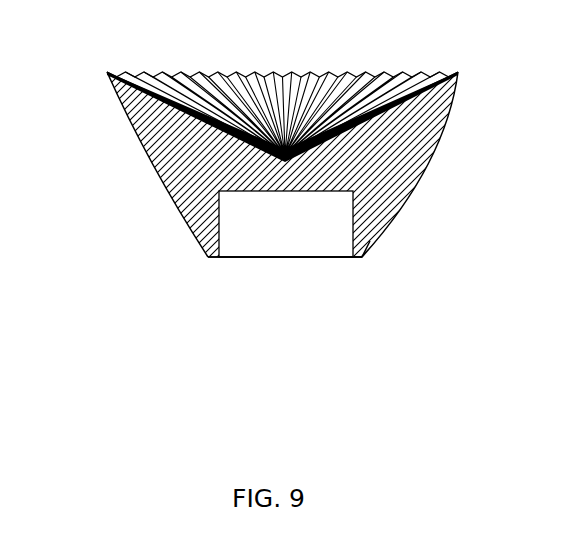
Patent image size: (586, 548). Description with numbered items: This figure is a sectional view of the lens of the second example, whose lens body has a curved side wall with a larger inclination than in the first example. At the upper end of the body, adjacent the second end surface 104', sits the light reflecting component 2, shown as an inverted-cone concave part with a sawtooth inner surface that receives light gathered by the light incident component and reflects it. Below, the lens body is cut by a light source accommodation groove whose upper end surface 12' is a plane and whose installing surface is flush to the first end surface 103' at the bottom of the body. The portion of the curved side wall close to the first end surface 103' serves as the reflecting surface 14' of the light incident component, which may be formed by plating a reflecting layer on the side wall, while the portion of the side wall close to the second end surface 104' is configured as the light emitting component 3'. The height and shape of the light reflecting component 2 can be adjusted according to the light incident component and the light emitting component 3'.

The light reflecting component 2 is at (345, 72).
The light emitting component 3' is at (293, 165).
The upper end surface of the light source accommodation groove 12' is at (286, 249).
The reflecting surface 14' is at (377, 271).
The first end surface 103' is at (285, 315).
The second end surface 104' is at (253, 47).